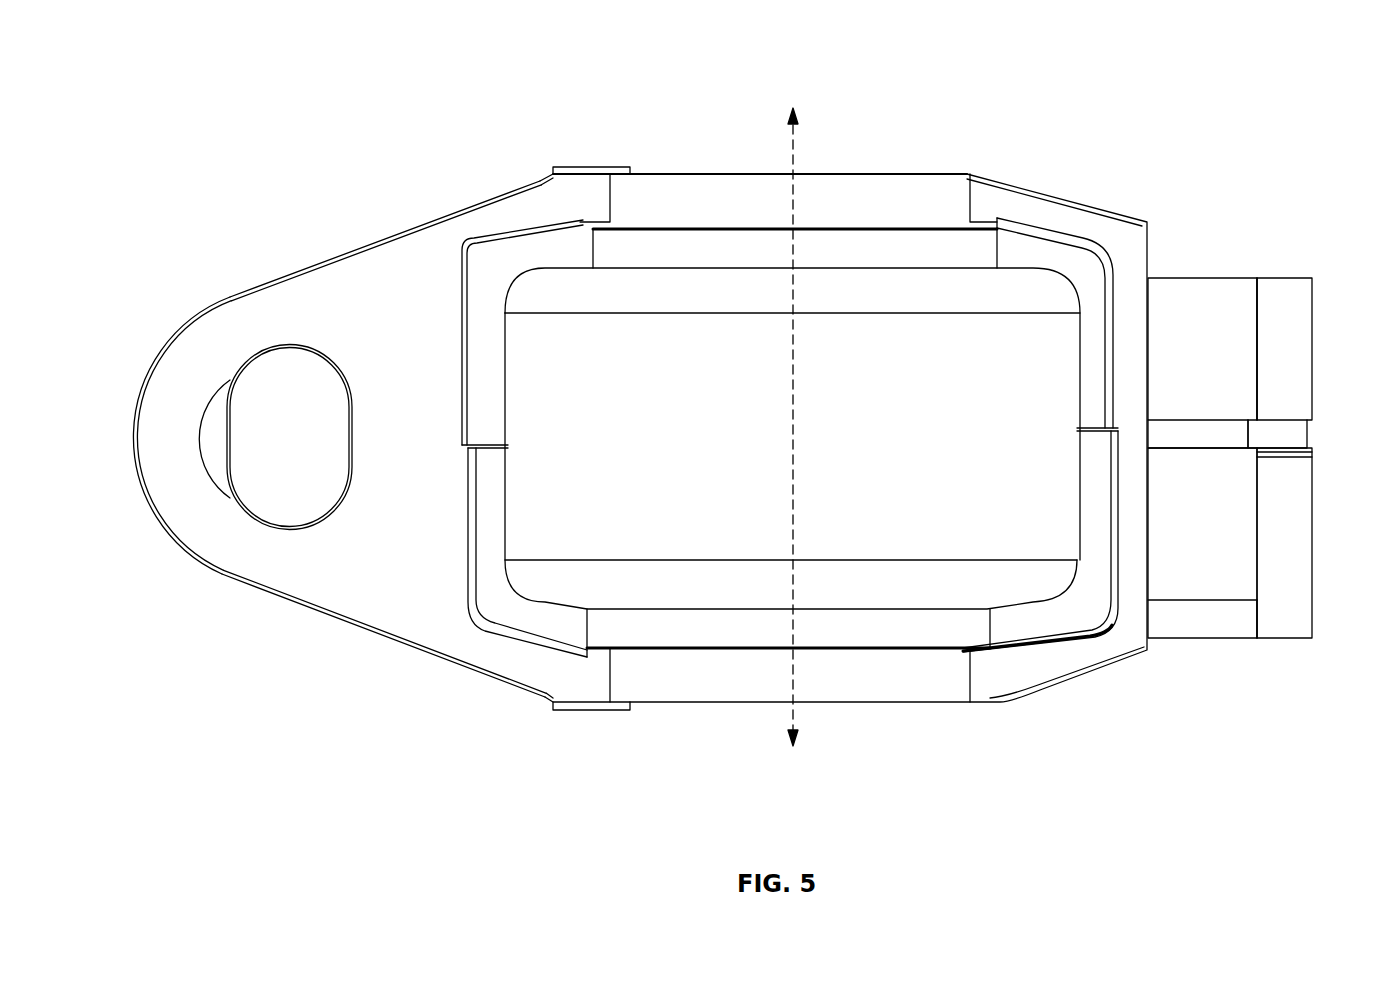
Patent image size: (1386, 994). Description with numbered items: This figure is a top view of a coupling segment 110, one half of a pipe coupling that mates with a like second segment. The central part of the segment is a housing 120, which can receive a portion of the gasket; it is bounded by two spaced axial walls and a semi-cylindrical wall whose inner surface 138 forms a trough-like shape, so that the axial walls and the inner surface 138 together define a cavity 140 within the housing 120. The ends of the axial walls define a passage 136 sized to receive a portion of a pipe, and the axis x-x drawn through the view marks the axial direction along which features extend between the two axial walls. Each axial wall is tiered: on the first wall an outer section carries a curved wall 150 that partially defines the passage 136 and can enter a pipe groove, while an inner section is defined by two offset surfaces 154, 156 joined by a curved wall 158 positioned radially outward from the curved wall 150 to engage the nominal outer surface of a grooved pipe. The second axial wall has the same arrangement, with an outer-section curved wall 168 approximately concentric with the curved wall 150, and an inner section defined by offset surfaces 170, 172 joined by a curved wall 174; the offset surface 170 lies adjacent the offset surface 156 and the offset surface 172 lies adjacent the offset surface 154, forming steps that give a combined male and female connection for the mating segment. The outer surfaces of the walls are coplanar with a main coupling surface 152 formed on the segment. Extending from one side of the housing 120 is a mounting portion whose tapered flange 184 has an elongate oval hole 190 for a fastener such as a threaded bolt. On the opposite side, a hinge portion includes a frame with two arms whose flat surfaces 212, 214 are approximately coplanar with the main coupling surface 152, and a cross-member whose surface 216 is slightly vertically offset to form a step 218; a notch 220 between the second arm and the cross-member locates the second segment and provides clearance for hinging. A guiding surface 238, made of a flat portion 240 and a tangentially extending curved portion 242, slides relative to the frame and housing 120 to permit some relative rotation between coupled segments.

The coupling segment 110 is at (1120, 88).
The housing 120 is at (578, 155).
The passage 136 is at (882, 162).
The inner surface 138 is at (690, 340).
The cavity 140 is at (627, 525).
The curved wall 150 is at (903, 677).
The main coupling surface 152 is at (362, 307).
The offset surface 154 is at (1060, 628).
The offset surface 156 is at (493, 610).
The curved wall 158 is at (957, 627).
The curved wall 168 is at (918, 200).
The offset surface 170 is at (483, 270).
The offset surface 172 is at (1080, 275).
The curved wall 174 is at (952, 250).
The flange 184 is at (357, 583).
The hole 190 is at (273, 343).
The flat surface 212 is at (1195, 617).
The flat surface 214 is at (1203, 437).
The surface 216 is at (1285, 597).
The step 218 is at (1253, 620).
The notch 220 is at (1287, 438).
The guiding surface 238 is at (1240, 363).
The flat portion 240 is at (1278, 305).
The curved portion 242 is at (1185, 305).